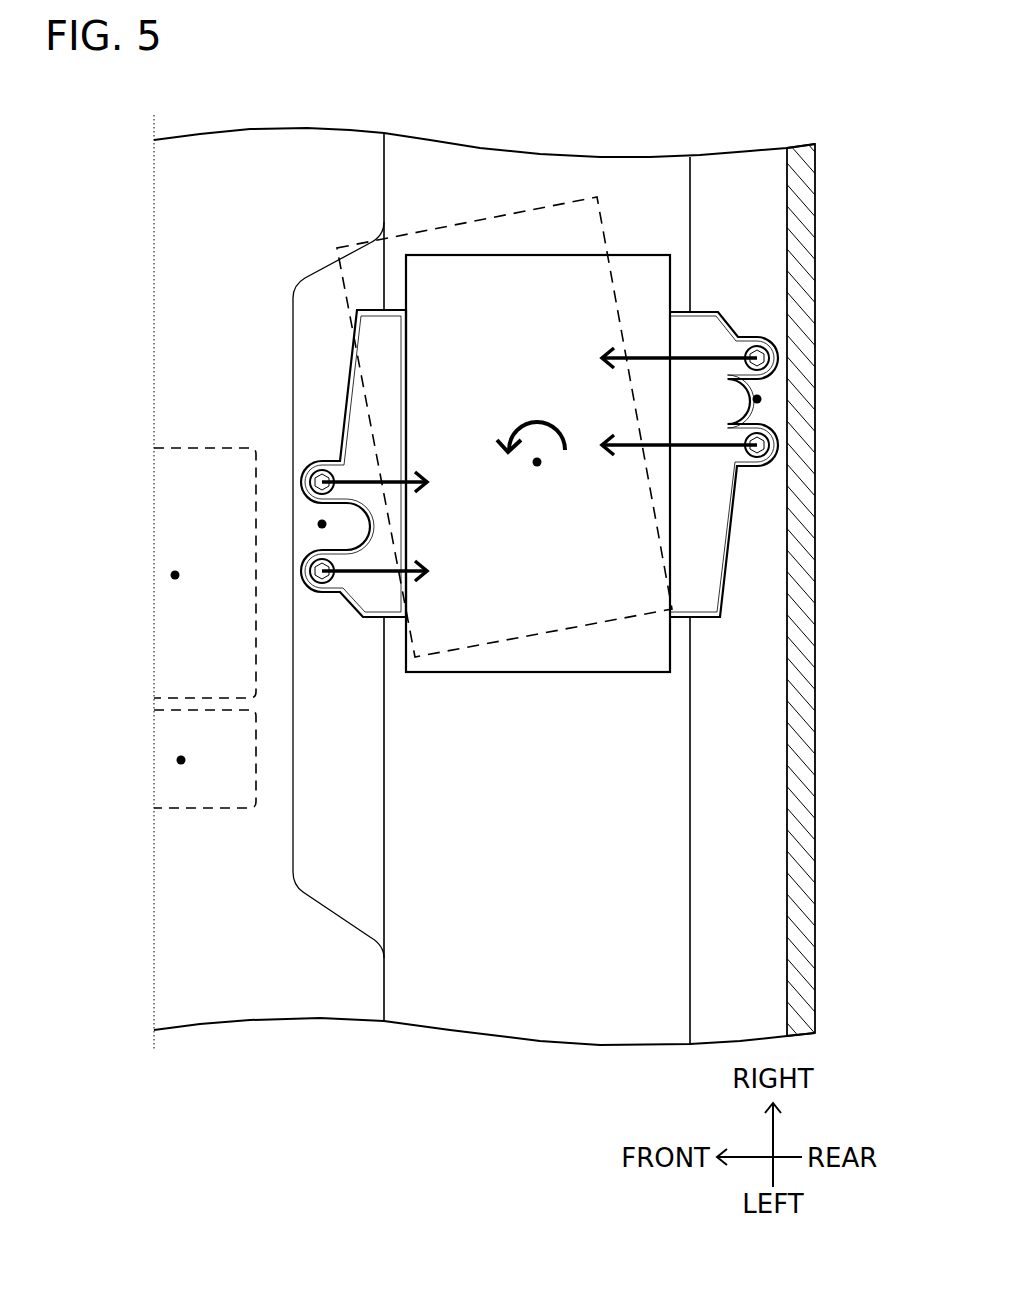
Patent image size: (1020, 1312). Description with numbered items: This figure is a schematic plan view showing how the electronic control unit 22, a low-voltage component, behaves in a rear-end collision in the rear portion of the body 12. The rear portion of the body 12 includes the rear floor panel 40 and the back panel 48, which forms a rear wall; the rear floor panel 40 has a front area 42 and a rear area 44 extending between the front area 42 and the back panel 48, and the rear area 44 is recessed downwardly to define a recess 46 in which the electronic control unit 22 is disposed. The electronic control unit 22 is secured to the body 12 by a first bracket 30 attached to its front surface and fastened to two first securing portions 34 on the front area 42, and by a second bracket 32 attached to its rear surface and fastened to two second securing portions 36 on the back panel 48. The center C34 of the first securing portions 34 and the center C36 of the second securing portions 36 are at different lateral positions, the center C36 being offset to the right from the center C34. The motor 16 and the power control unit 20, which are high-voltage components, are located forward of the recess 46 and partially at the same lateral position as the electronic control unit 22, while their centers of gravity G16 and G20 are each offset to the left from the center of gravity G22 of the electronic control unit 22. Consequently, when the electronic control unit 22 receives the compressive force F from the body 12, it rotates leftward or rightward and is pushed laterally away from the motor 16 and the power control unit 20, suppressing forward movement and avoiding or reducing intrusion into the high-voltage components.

The body 12 is at (768, 92).
The motor 16 is at (203, 628).
The power control unit 20 is at (180, 795).
The electronic control unit 22 is at (447, 223).
The first bracket 30 is at (360, 407).
The second bracket 32 is at (700, 560).
The first securing portions 34 is at (322, 482).
The second securing portions 36 is at (765, 352).
The rear floor panel 40 is at (368, 1048).
The front area 42 is at (312, 1005).
The rear area 44 is at (540, 1015).
The recess 46 is at (581, 212).
The back panel 48 is at (799, 923).
The center of gravity of the motor G16 is at (175, 575).
The center of gravity of the power control unit G20 is at (181, 760).
The center of gravity of the electronic control unit G22 is at (537, 462).
The center of the two first securing portions C34 is at (322, 524).
The center of the two second securing portions C36 is at (757, 399).
The compressive force F is at (655, 445).